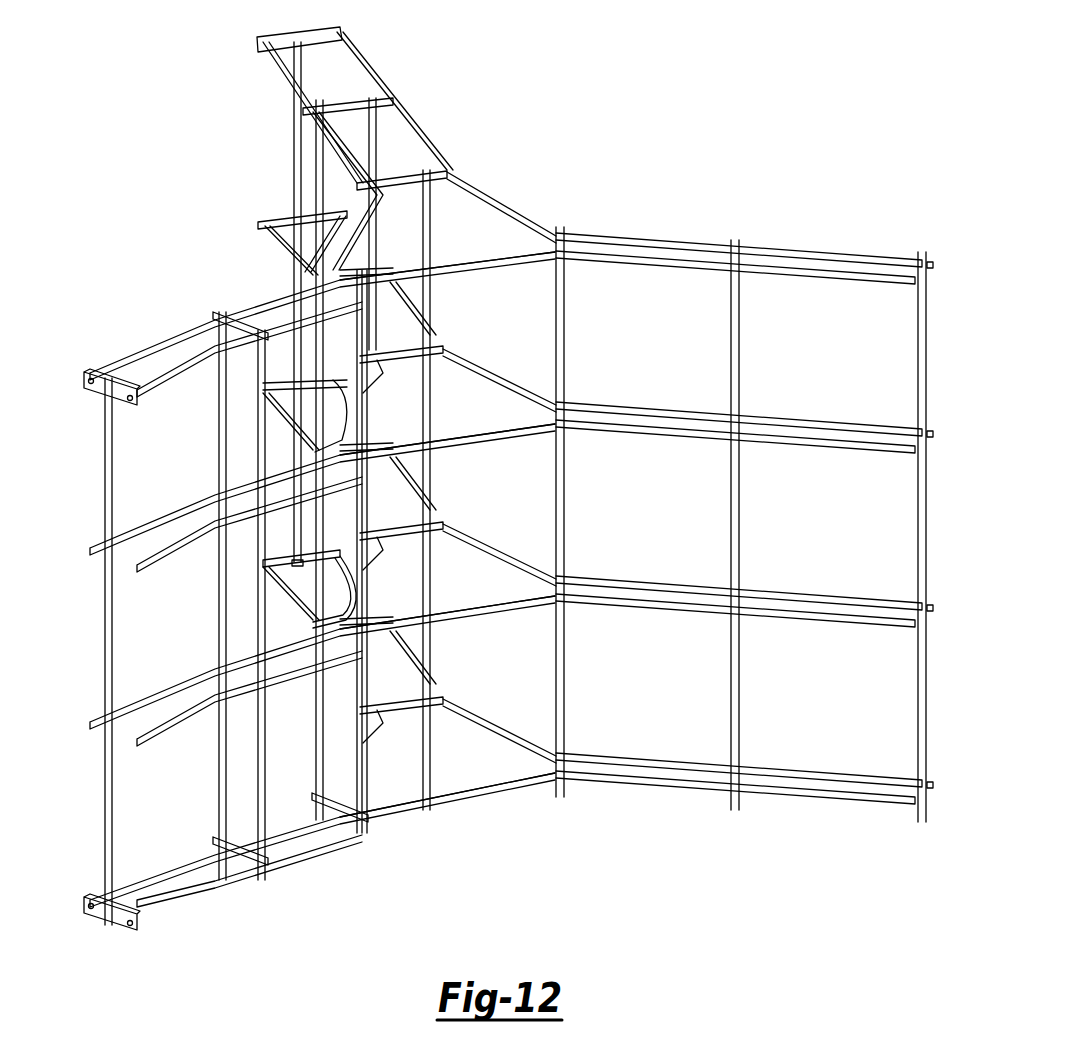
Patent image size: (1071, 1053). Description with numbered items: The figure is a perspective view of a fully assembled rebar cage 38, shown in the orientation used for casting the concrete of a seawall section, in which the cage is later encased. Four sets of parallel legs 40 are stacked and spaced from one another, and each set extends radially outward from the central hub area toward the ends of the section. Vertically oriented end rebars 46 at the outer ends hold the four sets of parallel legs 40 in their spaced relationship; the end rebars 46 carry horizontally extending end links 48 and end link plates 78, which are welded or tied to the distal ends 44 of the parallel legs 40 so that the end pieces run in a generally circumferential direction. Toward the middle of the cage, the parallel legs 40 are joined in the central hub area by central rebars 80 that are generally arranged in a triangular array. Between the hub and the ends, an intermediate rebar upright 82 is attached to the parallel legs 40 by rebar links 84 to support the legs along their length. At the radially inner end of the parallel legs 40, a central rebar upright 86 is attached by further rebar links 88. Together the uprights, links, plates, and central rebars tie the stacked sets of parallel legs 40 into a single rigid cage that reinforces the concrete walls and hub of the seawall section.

The rebar cage 38 is at (763, 118).
The parallel legs 40 is at (770, 268).
The distal ends 44 is at (90, 736).
The end rebar 46 is at (106, 638).
The end links 48 is at (128, 752).
The end link plates 78 is at (88, 385).
The central rebars 80 is at (508, 224).
The intermediate rebar upright 82 is at (265, 795).
The rebar links 84 is at (246, 318).
The central rebar upright 86 is at (566, 320).
The rebar links 88 is at (437, 176).